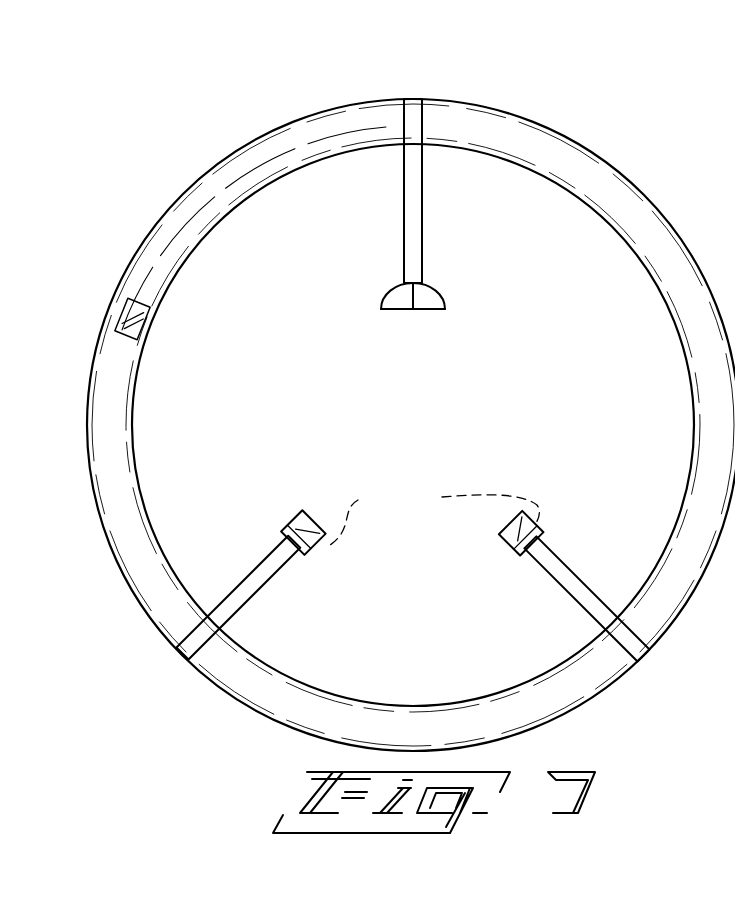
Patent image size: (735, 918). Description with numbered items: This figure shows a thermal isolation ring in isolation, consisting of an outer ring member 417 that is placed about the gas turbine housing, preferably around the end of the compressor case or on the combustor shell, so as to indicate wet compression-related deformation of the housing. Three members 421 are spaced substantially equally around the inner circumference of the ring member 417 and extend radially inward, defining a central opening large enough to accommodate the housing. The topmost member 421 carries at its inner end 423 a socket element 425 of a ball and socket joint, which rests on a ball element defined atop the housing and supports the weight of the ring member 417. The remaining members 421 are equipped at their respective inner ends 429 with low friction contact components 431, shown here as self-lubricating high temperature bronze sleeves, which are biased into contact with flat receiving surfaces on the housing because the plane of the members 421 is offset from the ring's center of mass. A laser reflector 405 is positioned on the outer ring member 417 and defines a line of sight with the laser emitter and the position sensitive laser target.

The outer ring member 417 is at (620, 152).
The inwardly-extending members 421 is at (422, 222).
The inner end 423 is at (412, 312).
The socket element 425 is at (438, 312).
The laser reflector 405 is at (150, 324).
The inner ends 429 is at (433, 512).
The low friction contact components 431 is at (290, 522).